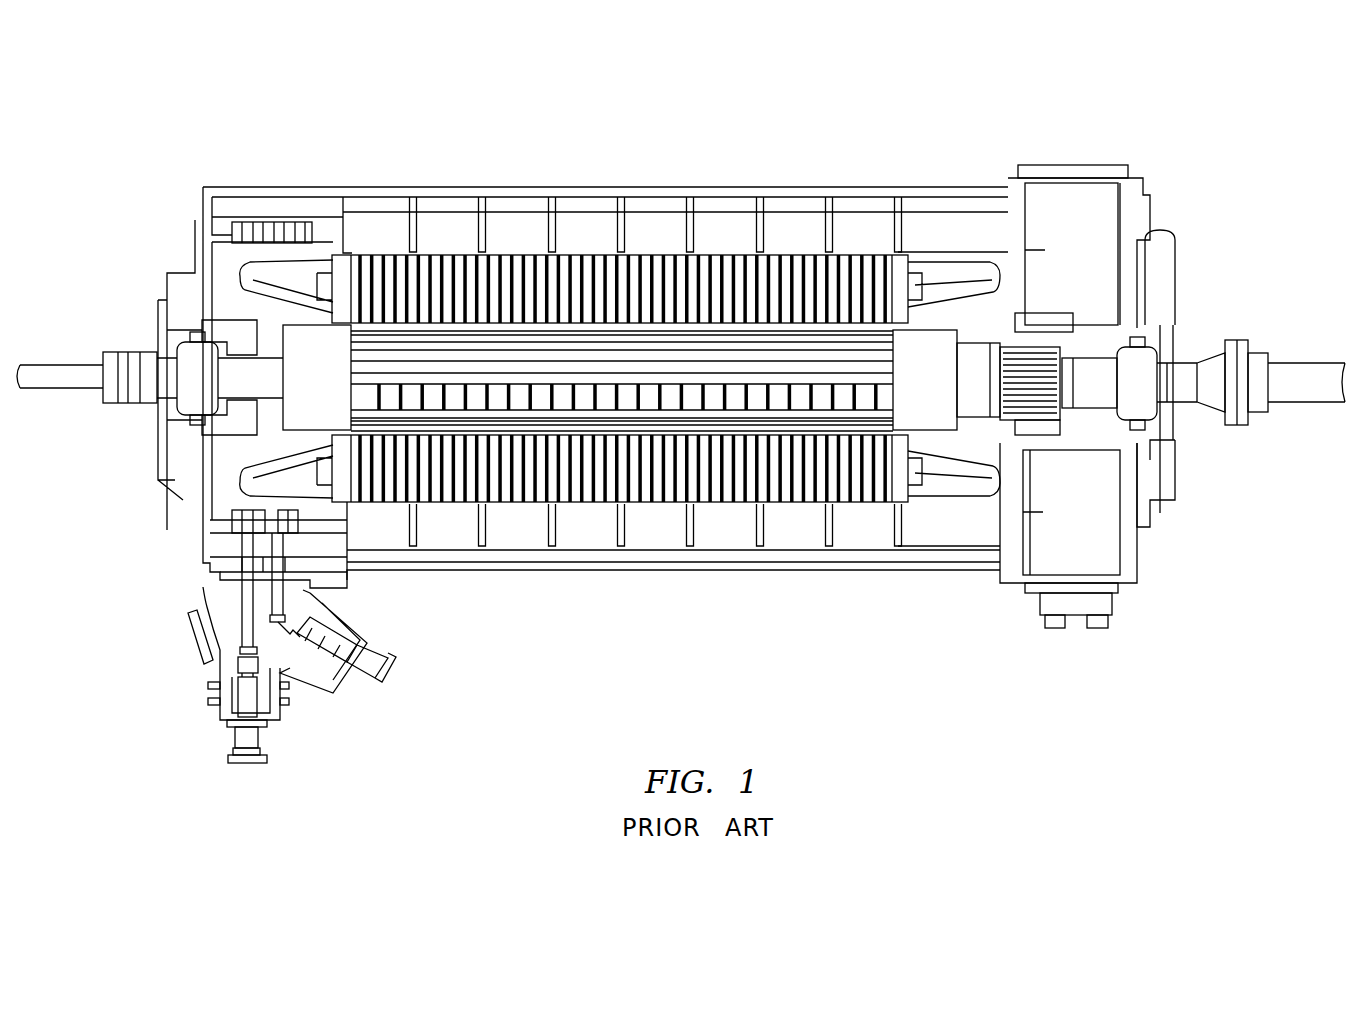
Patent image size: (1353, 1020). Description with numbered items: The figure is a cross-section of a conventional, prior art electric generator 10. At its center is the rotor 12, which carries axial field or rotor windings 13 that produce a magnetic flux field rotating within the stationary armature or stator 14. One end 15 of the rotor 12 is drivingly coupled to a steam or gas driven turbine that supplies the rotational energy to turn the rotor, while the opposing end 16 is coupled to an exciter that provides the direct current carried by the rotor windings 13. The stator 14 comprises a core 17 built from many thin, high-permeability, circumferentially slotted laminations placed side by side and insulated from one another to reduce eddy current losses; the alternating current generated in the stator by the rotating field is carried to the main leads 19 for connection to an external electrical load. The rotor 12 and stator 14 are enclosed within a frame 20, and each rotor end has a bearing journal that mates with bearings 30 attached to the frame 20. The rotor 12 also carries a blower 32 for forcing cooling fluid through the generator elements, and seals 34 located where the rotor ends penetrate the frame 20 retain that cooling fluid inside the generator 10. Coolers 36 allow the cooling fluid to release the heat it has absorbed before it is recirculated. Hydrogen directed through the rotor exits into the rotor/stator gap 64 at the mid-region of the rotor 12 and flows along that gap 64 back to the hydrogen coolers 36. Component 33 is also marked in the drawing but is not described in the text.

The electric generator 10 is at (1204, 141).
The rotor 12 is at (817, 428).
The rotor windings 13 is at (758, 380).
The stator 14 is at (443, 490).
The end of the rotor 15 is at (1312, 421).
The opposing end 16 is at (60, 402).
The core 17 is at (810, 267).
The main leads 19 is at (352, 695).
The frame 20 is at (267, 187).
The bearings 30 is at (197, 403).
The blower 32 is at (1032, 360).
The rotor end ring 33 is at (302, 348).
The seals 34 is at (157, 340).
The coolers 36 is at (1050, 225).
The rotor/stator gap 64 is at (607, 332).